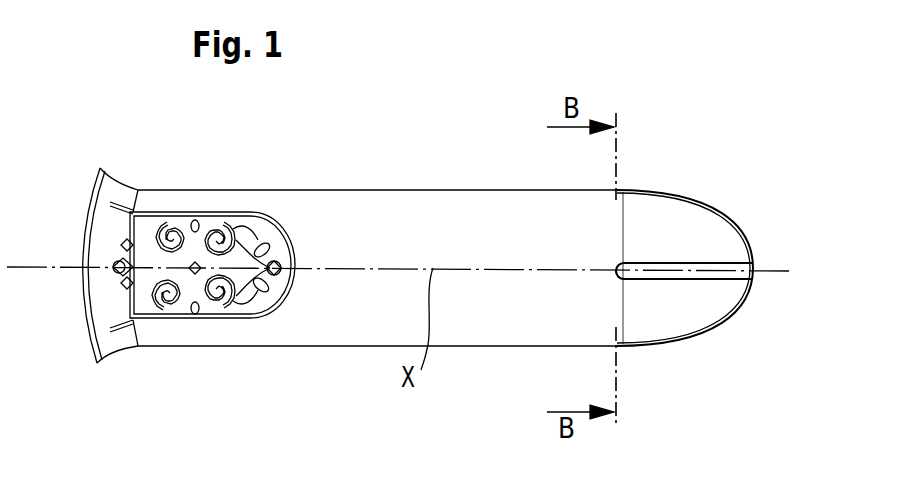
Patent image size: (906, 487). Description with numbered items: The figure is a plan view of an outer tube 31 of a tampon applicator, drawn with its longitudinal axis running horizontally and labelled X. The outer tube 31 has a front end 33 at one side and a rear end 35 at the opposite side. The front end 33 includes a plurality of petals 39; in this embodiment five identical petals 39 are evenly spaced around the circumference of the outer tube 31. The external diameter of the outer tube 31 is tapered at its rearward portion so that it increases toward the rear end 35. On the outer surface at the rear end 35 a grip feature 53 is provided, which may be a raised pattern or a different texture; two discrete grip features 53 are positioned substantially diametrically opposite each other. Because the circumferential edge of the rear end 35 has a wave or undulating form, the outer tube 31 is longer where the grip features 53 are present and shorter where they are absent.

The outer tube 31 is at (403, 184).
The front end 33 is at (737, 218).
The rear end 35 is at (95, 305).
The petals 39 is at (700, 308).
The grip feature 53 is at (183, 302).